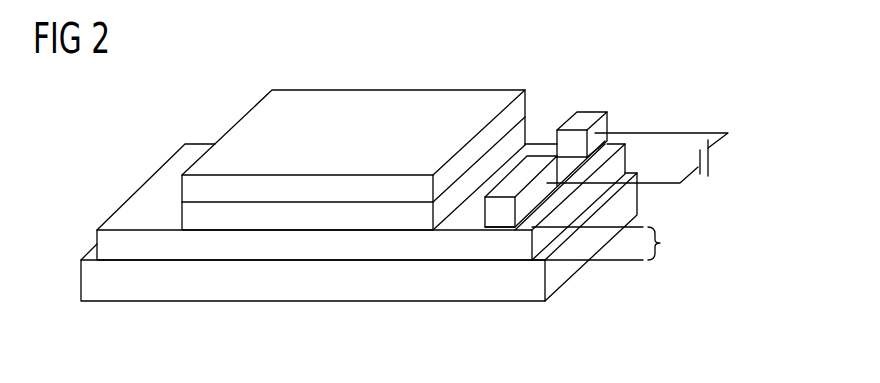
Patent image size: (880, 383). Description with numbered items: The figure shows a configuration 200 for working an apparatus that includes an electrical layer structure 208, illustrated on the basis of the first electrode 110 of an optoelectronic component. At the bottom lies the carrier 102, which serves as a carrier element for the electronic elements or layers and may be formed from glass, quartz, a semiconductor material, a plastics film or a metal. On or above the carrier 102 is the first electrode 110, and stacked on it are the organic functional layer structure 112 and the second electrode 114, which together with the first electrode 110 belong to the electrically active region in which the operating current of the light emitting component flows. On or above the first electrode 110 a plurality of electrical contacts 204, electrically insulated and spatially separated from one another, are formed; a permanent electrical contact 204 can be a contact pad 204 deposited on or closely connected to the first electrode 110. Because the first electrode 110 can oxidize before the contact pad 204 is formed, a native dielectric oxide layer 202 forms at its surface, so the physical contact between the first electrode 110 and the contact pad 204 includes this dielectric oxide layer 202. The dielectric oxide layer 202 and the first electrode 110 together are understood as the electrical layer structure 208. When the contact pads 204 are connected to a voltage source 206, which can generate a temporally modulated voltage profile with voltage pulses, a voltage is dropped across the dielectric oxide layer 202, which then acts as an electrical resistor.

The configuration for working an apparatus including an electrical layer structure 200 is at (660, 66).
The carrier 102 is at (365, 292).
The first electrode 110 is at (103, 240).
The organic functional layer structure 112 is at (210, 220).
The second electrode 114 is at (191, 185).
The dielectric oxide layer 202 is at (497, 235).
The electrical contact 204 is at (518, 178).
The voltage source 206 is at (709, 170).
The electrical layer structure 208 is at (615, 243).